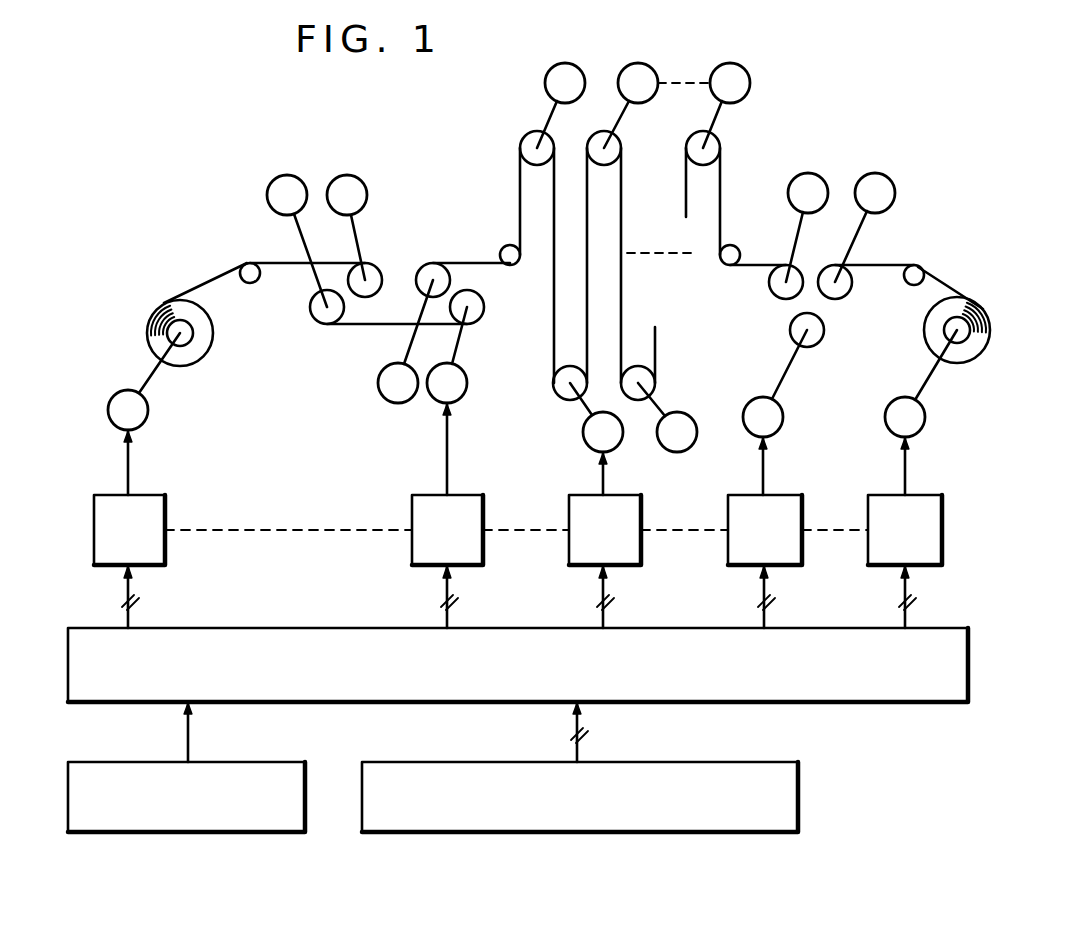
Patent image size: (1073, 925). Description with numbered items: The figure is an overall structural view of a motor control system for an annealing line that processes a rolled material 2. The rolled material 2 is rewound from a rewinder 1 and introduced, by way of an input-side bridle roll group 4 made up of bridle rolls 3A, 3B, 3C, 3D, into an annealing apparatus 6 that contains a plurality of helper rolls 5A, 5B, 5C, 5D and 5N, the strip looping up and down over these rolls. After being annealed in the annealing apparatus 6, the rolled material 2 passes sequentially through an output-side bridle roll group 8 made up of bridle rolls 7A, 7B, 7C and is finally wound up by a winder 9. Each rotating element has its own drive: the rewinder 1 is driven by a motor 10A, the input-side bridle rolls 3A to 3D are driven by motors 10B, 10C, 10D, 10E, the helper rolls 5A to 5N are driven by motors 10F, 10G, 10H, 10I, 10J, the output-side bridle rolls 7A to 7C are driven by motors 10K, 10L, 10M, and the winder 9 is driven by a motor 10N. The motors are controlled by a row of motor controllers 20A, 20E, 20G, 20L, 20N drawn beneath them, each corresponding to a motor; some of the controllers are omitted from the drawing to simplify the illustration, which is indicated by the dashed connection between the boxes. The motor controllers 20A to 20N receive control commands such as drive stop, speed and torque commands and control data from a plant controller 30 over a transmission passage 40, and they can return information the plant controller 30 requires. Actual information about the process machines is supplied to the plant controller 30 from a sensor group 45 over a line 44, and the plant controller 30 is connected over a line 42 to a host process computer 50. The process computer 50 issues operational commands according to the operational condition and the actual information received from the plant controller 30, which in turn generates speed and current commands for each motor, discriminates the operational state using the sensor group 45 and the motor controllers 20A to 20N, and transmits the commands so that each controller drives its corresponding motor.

The rewinder 1 is at (165, 303).
The rolled material 2 is at (236, 268).
The bridle roll 3A is at (385, 275).
The bridle roll 3B is at (312, 320).
The bridle roll 3C is at (451, 278).
The bridle roll 3D is at (481, 318).
The input-side bridle roll group 4 is at (393, 255).
The helper roll 5A is at (520, 148).
The helper roll 5B is at (563, 400).
The helper roll 5C is at (619, 142).
The helper roll 5D is at (656, 390).
The helper roll 5N is at (720, 152).
The annealing apparatus 6 is at (530, 118).
The bridle roll 7A is at (776, 298).
The bridle roll 7B is at (819, 346).
The bridle roll 7C is at (851, 293).
The output-side bridle roll group 8 is at (880, 156).
The winder 9 is at (983, 310).
The motor 10A is at (150, 412).
The motor 10B is at (342, 176).
The motor 10C is at (278, 178).
The motor 10D is at (378, 398).
The motor 10E is at (467, 395).
The motor 10F is at (580, 66).
The motor 10G is at (621, 444).
The motor 10H is at (653, 66).
The motor 10I is at (693, 444).
The motor 10J is at (745, 66).
The motor 10K is at (840, 160).
The motor 10L is at (784, 420).
The motor 10M is at (896, 190).
The motor 10N is at (926, 420).
The motor controller 20A is at (168, 548).
The motor controller 20E is at (485, 548).
The motor controller 20G is at (643, 548).
The motor controller 20L is at (805, 548).
The motor controller 20N is at (944, 521).
The plant controller 30 is at (970, 672).
The transmission passage 40 is at (124, 617).
The signal line 42 is at (579, 748).
The signal line 44 is at (190, 733).
The sensor group 45 is at (307, 800).
The process computer 50 is at (800, 786).